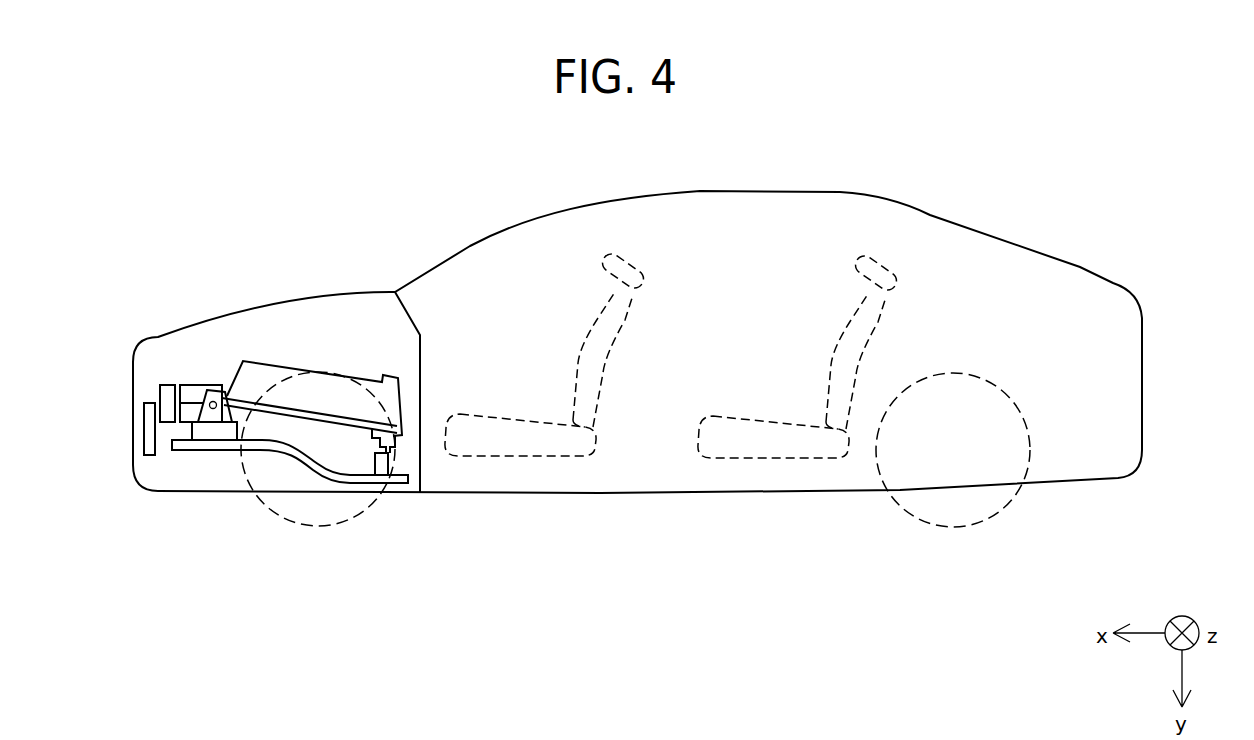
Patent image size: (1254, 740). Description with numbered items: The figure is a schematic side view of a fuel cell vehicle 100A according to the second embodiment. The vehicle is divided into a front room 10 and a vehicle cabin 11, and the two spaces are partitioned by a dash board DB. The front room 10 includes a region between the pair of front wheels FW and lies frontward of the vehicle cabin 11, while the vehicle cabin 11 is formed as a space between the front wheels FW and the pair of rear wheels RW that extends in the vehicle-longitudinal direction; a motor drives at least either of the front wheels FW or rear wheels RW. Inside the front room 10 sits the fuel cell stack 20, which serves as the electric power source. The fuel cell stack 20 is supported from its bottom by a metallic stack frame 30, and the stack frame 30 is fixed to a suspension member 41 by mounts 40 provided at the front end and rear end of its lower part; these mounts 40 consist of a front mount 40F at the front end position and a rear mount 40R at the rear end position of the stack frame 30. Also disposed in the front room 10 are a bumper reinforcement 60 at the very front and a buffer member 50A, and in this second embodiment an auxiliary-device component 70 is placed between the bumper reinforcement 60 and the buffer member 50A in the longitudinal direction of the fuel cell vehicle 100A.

The fuel cell vehicle 100A is at (840, 192).
The front room 10 is at (390, 329).
The vehicle cabin 11 is at (737, 242).
The dash board DB is at (420, 402).
The fuel cell stack 20 is at (272, 360).
The stack frame 30 is at (228, 390).
The buffer member 50A is at (203, 385).
The auxiliary-device component 70 is at (168, 385).
The bumper reinforcement 60 is at (148, 403).
The suspension member 41 is at (268, 451).
The front mount 40F is at (192, 431).
The rear mount 40R is at (373, 466).
The mounts 40 is at (400, 575).
The front wheels FW is at (293, 523).
The rear wheels RW is at (987, 517).